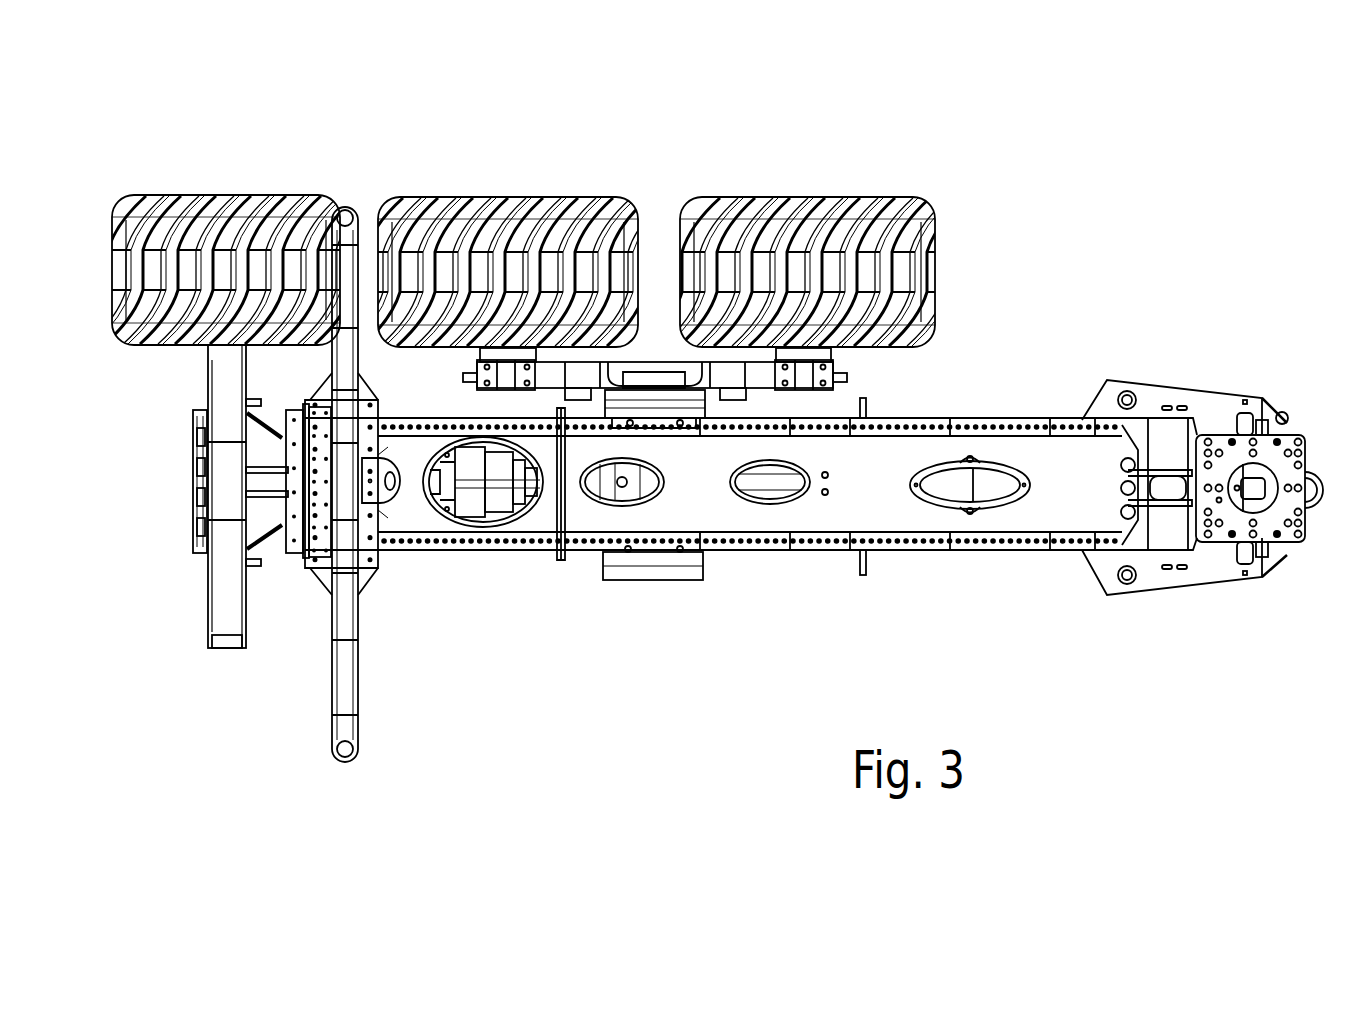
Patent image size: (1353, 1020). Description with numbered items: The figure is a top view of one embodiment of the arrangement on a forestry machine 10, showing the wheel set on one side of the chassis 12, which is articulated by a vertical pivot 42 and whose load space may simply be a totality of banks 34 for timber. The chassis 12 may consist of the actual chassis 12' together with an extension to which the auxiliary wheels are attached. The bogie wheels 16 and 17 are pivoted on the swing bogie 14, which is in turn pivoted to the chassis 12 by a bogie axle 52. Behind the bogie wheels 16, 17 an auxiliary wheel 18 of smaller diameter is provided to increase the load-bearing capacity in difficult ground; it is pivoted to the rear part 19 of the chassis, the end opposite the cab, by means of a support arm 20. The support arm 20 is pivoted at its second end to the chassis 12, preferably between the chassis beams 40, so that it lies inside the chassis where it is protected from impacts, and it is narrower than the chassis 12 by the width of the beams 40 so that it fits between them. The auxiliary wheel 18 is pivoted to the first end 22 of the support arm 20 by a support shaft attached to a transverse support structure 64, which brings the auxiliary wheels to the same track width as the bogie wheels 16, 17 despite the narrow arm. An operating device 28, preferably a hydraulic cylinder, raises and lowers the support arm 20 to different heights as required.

The agricultural implement / hitch assembly 10 is at (1010, 260).
The chassis 12 is at (751, 546).
The actual chassis 12' is at (1082, 512).
The swing bogie 14 is at (678, 362).
The bogie wheel 16 is at (816, 222).
The bogie wheel 17 is at (530, 222).
The auxiliary wheel 18 is at (237, 223).
The rear part of the chassis 19 is at (380, 596).
The support arm 20 is at (260, 445).
The first end of the support arm 22 is at (268, 552).
The operating device 28 is at (500, 518).
The banks for timber 34 is at (348, 690).
The chassis beams 40 is at (457, 418).
The vertical pivot 42 is at (300, 548).
The bogie axle 52 is at (697, 402).
The transverse support structure 64 is at (227, 590).